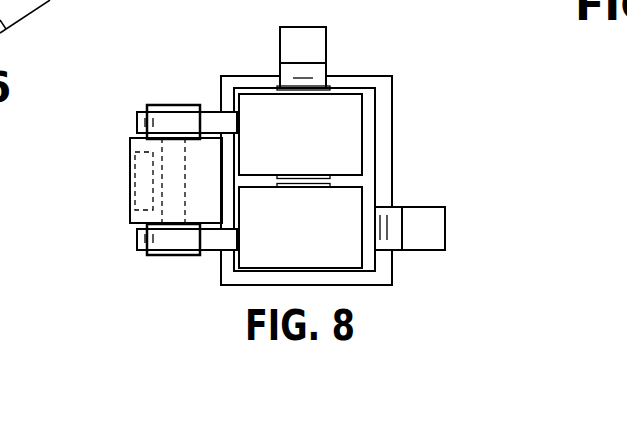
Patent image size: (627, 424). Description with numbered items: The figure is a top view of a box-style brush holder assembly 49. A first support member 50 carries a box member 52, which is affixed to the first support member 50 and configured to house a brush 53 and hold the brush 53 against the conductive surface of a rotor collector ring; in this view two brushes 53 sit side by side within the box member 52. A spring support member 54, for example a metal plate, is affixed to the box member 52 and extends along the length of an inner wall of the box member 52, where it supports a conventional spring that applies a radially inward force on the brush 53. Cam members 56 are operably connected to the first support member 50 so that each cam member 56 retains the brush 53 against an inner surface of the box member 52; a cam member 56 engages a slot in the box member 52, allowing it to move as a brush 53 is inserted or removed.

The brush holder assembly 49 is at (502, 138).
The first support member 50 is at (130, 168).
The box member 52 is at (383, 142).
The brush 53 is at (311, 144).
The spring support member 54 is at (313, 47).
The cam member 56 is at (140, 124).